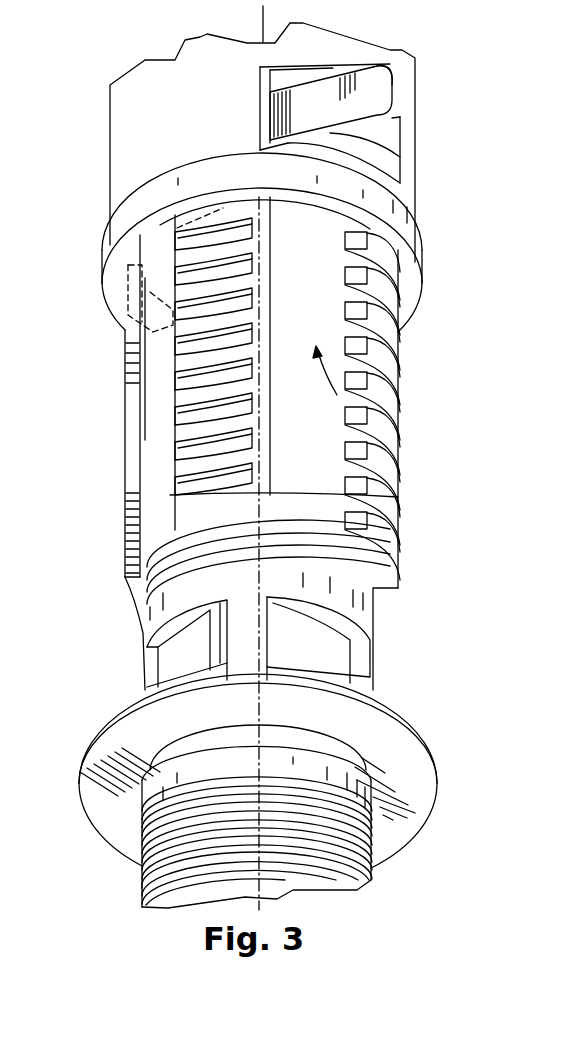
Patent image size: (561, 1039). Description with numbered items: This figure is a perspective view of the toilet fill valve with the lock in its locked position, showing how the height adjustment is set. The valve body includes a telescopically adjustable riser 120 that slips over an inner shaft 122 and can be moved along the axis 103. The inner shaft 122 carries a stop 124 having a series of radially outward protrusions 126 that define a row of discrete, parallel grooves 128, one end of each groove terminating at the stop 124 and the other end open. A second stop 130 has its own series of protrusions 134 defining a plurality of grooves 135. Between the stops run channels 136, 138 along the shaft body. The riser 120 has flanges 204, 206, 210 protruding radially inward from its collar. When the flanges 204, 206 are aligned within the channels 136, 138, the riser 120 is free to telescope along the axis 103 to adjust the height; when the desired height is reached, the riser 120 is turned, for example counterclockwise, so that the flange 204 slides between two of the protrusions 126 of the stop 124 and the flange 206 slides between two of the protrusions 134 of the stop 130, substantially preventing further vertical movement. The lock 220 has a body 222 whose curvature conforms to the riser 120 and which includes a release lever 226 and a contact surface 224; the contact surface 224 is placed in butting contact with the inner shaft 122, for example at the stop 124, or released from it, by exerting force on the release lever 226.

The axis 103 is at (262, 6).
The riser 120 is at (125, 113).
The inner shaft 122 is at (95, 434).
The stop 124 is at (265, 122).
The protrusions 126 is at (187, 435).
The grooves 128 is at (150, 206).
The stop 130 is at (398, 507).
The protrusions 134 is at (378, 322).
The grooves 135 is at (352, 232).
The channel 136 is at (160, 384).
The channel 138 is at (370, 417).
The flange 204 is at (173, 232).
The flange 206 is at (2, 2).
The flange 210 is at (125, 322).
The lock 220 is at (412, 89).
The body 222 is at (380, 150).
The contact surface 224 is at (262, 147).
The release lever 226 is at (385, 68).